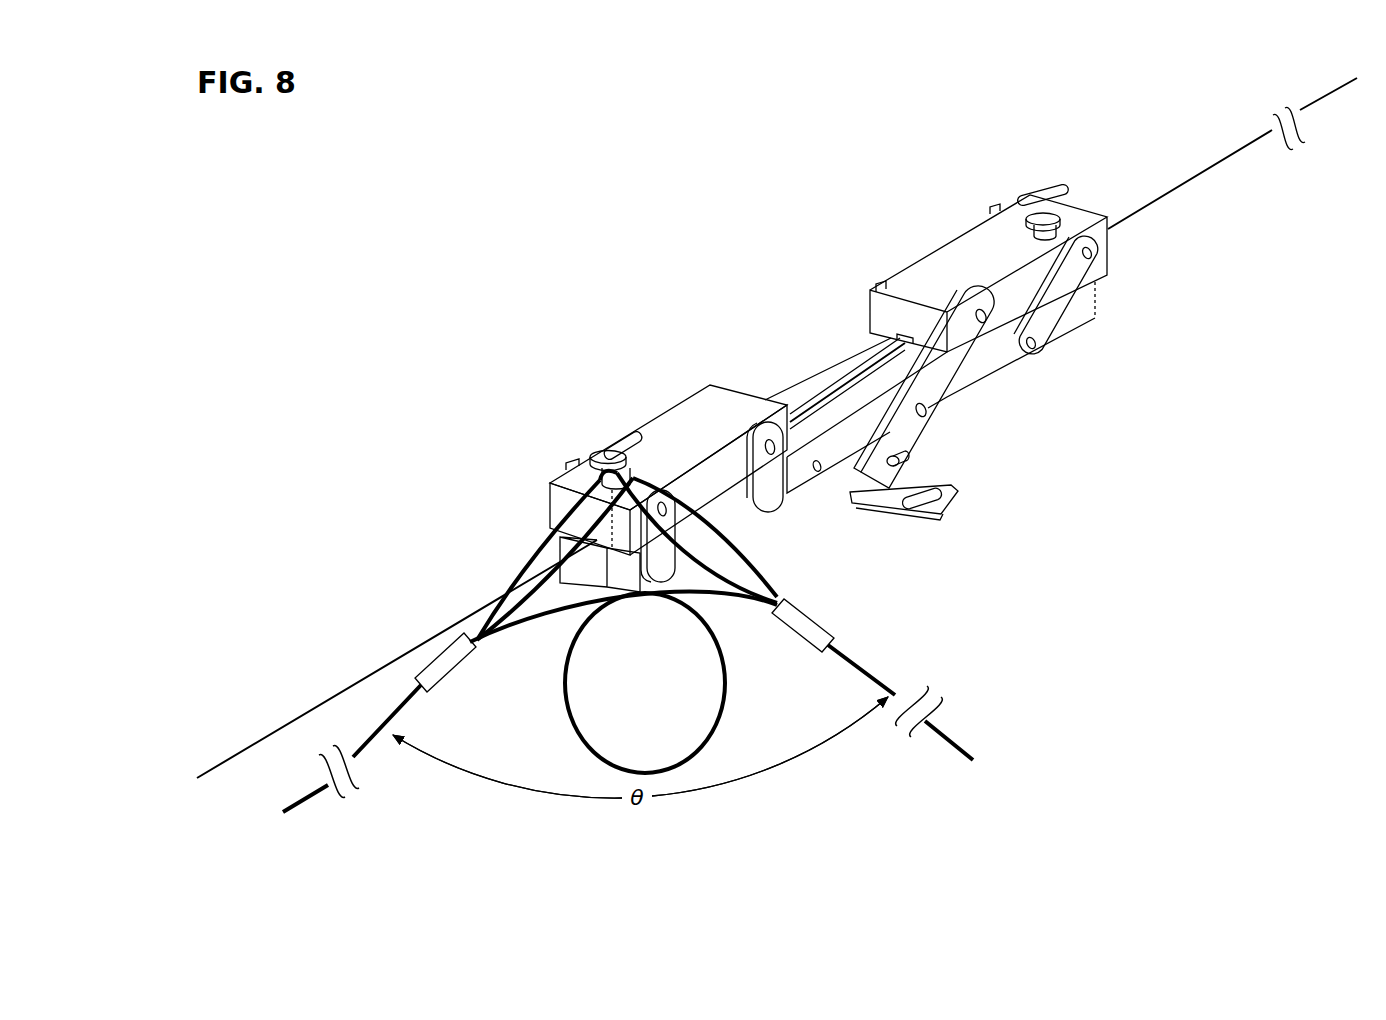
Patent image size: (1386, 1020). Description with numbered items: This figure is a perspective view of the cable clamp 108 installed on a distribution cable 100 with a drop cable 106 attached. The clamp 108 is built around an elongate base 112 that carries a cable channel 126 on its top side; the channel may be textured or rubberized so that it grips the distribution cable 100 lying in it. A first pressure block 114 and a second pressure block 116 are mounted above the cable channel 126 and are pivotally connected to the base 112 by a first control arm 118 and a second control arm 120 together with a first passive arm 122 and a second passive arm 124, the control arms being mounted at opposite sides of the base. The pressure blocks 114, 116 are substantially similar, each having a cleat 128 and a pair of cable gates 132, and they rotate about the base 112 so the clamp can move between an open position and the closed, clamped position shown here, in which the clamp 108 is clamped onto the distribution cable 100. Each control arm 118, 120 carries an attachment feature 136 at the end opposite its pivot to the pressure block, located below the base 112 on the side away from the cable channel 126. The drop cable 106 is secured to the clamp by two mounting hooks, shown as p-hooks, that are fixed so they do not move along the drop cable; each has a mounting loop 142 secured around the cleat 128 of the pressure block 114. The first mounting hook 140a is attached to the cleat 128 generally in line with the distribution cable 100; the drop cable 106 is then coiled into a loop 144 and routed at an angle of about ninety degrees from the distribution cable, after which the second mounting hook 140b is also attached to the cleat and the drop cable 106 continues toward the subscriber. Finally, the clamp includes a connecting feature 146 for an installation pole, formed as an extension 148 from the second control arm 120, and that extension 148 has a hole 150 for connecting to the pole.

The distribution cable 100 is at (815, 410).
The drop cable 106 is at (360, 747).
The clamp 108 is at (815, 275).
The elongate base 112 is at (987, 365).
The first pressure block 114 is at (677, 440).
The second pressure block 116 is at (958, 272).
The first control arm 118 is at (672, 433).
The second control arm 120 is at (940, 380).
The first passive arm 122 is at (563, 467).
The second passive arm 124 is at (1058, 298).
The cable channel 126 is at (863, 363).
The cleat 128 is at (610, 447).
The cable gates 132 is at (880, 283).
The attachment feature 136 is at (920, 455).
The first mounting hook 140a is at (456, 684).
The second mounting hook 140b is at (838, 625).
The mounting loop 142 is at (537, 543).
The loop 144 is at (745, 685).
The connecting feature 146 is at (895, 490).
The extension 148 is at (880, 488).
The hole 150 is at (927, 500).